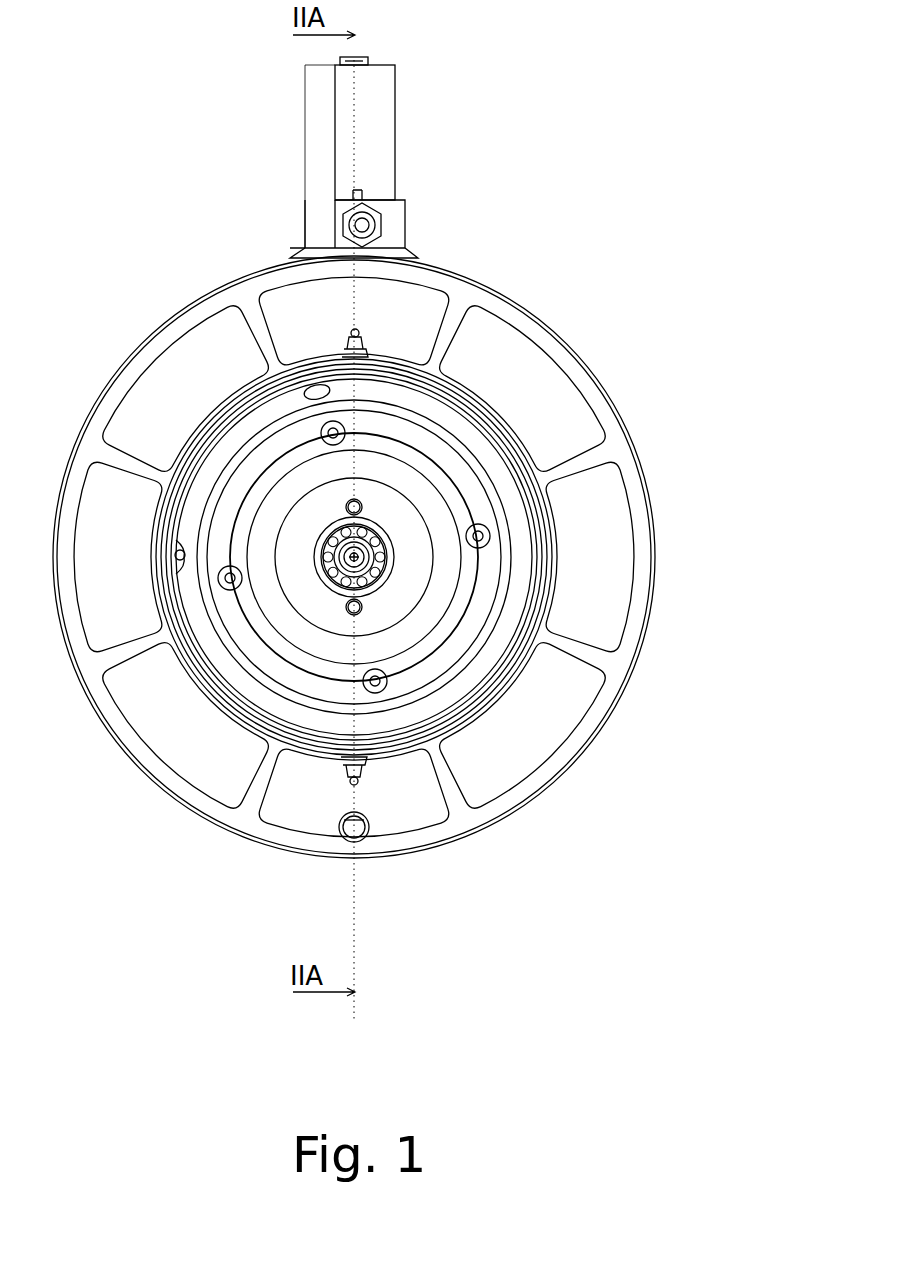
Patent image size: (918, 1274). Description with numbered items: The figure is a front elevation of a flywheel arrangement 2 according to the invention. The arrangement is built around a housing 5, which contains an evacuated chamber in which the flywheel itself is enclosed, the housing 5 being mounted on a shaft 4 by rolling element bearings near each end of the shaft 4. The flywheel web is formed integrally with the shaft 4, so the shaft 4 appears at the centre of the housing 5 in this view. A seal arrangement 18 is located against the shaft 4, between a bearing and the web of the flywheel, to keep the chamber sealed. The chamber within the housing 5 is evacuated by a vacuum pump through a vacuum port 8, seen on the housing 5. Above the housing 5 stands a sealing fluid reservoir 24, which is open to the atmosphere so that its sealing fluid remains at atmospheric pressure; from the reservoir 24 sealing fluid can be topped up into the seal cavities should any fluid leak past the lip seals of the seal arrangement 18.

The flywheel arrangement 2 is at (119, 222).
The shaft 4 is at (370, 560).
The housing 5 is at (143, 762).
The vacuum port 8 is at (367, 833).
The seal arrangement 18 is at (373, 543).
The sealing fluid reservoir 24 is at (378, 122).